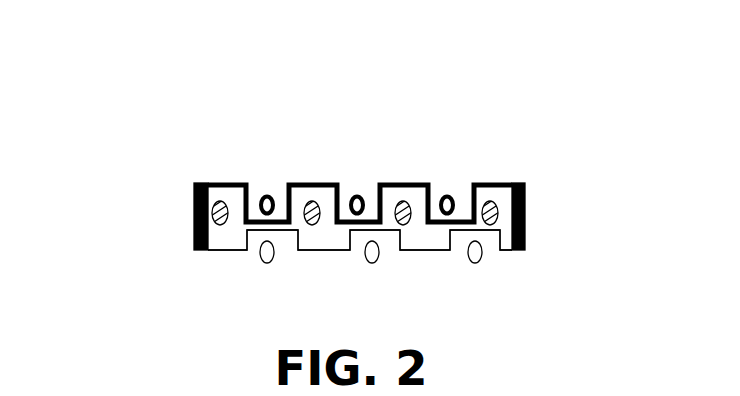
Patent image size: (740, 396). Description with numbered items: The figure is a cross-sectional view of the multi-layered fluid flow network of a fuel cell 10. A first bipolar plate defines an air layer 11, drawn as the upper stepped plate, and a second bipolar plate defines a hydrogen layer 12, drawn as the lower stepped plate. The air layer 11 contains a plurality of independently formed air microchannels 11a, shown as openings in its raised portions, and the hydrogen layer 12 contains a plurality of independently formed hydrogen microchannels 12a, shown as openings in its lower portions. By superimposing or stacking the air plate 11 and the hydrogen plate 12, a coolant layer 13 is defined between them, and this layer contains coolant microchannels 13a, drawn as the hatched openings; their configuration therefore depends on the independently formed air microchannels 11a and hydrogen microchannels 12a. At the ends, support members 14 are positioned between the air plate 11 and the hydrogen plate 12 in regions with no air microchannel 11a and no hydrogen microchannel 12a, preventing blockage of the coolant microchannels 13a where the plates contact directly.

The fuel cell 10 is at (118, 162).
The air layer 11 is at (523, 182).
The air microchannels 11a is at (358, 194).
The hydrogen layer 12 is at (523, 252).
The hydrogen microchannels 12a is at (260, 254).
The coolant layer 13 is at (427, 232).
The coolant microchannels 13a is at (228, 206).
The support members 14 is at (191, 210).